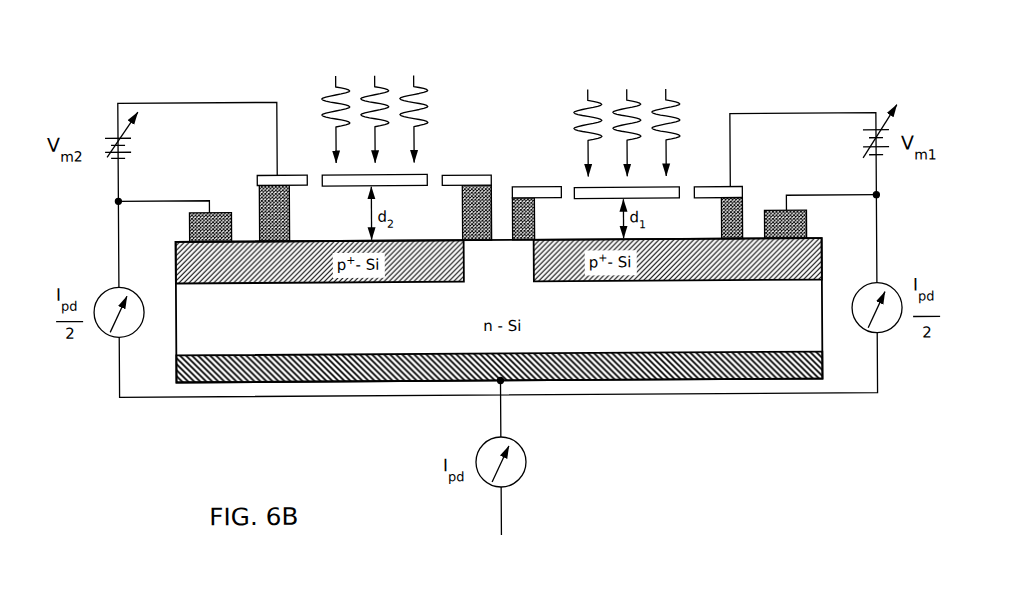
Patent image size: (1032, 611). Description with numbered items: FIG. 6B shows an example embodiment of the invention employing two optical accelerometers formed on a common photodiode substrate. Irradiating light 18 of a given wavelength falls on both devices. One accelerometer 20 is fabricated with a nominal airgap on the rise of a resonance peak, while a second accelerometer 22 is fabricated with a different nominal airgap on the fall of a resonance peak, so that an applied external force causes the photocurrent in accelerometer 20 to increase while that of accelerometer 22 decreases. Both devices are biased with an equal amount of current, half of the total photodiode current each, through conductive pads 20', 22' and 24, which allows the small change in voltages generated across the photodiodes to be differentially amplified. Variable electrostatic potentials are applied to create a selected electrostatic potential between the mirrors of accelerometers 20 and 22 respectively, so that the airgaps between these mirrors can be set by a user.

The irradiating light 18 is at (570, 102).
The accelerometer 20 is at (652, 110).
The second accelerometer 22 is at (351, 105).
The conductive pad 20' is at (783, 194).
The conductive pad 22' is at (212, 197).
The conductive pad 24 is at (176, 369).